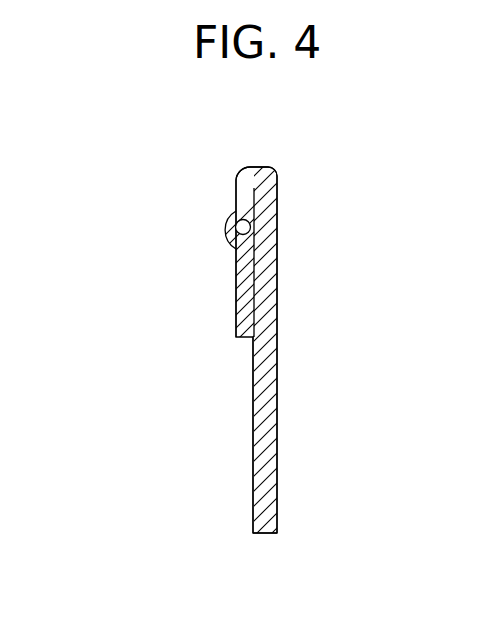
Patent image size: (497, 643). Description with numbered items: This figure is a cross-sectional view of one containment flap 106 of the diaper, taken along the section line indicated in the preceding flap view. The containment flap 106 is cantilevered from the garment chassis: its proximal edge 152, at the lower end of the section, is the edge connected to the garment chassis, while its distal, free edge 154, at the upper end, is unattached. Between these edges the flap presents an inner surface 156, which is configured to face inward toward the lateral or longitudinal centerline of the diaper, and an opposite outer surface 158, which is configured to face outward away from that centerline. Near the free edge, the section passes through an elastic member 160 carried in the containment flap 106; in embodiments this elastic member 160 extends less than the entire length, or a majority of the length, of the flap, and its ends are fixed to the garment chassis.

The containment flap 106 is at (327, 173).
The proximal edge 152 is at (265, 533).
The distal, free edge 154 is at (251, 167).
The inner surface 156 is at (253, 404).
The outer surface 158 is at (277, 384).
The elastic member 160 is at (243, 228).